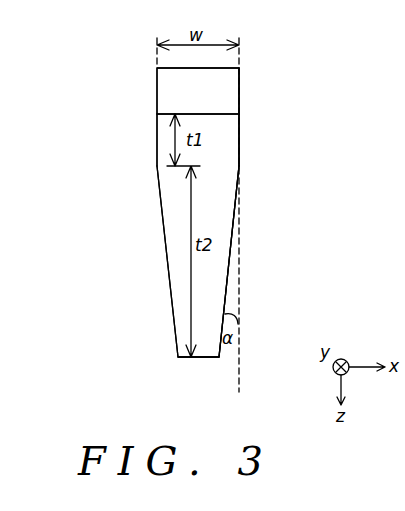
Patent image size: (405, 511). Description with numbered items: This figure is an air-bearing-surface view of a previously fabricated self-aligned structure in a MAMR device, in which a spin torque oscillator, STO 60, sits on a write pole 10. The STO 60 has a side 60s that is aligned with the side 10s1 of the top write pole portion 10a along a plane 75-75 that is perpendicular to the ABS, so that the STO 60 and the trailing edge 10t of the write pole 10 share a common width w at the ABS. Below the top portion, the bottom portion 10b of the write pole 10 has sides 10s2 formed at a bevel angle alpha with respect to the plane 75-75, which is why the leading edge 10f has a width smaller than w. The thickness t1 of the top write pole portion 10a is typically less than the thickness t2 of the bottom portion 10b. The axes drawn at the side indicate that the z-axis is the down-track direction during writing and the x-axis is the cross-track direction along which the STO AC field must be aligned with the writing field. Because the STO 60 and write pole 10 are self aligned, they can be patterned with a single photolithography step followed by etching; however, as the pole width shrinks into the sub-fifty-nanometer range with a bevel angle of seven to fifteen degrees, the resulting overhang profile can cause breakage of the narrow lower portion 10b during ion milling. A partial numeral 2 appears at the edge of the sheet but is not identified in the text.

The write pole 10 is at (84, 113).
The top write pole portion 10a is at (146, 113).
The bottom portion 10b is at (146, 166).
The leading edge 10f is at (197, 358).
The trailing edge 10t is at (220, 114).
The side 10s1 is at (240, 132).
The sides 10s2 is at (236, 206).
The STO 60 is at (157, 90).
The side 60s is at (240, 69).
The plane 75 is at (239, 391).
The partially visible reference 2 is at (396, 237).